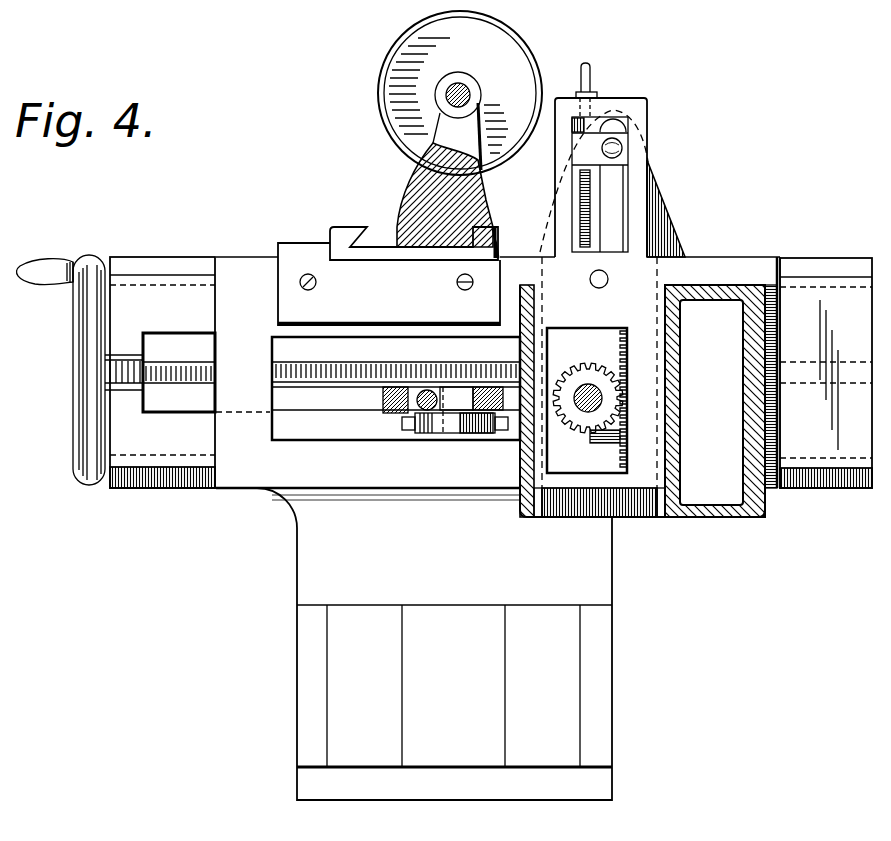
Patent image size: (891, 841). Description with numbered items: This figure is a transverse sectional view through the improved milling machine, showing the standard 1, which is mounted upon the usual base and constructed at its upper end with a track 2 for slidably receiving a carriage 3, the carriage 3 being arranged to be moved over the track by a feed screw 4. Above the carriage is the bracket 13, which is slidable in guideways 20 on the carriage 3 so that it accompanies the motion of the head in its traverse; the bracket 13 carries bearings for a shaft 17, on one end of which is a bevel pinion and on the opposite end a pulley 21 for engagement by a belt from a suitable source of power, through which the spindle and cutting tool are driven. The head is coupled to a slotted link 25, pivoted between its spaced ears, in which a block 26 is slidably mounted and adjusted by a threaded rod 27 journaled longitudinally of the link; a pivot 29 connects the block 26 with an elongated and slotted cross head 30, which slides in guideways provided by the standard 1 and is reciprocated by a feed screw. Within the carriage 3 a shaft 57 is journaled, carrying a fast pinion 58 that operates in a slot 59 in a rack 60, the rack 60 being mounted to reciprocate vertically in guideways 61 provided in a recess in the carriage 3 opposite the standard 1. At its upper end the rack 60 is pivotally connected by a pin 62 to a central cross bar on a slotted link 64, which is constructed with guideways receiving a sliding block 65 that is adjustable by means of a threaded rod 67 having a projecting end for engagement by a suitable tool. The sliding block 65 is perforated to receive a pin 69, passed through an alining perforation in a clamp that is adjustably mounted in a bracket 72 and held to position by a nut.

The standard 1 is at (318, 547).
The track 2 is at (148, 292).
The carriage 3 is at (765, 512).
The feed screw 4 is at (182, 362).
The bracket 13 is at (425, 186).
The shaft 17 is at (450, 95).
The guideways 20 is at (338, 232).
The pulley 21 is at (400, 57).
The slotted link 25 is at (383, 399).
The block 26 is at (447, 393).
The threaded rod 27 is at (427, 389).
The pivot 29 is at (462, 425).
The cross head 30 is at (432, 422).
The shaft 57 is at (591, 412).
The pinion 58 is at (583, 369).
The slot 59 is at (620, 328).
The rack 60 is at (640, 445).
The guideways 61 is at (548, 517).
The pin 62 is at (608, 278).
The slotted link 64 is at (633, 190).
The sliding block 65 is at (606, 138).
The threaded rod 67 is at (593, 79).
The pin 69 is at (623, 147).
The bracket 72 is at (670, 223).